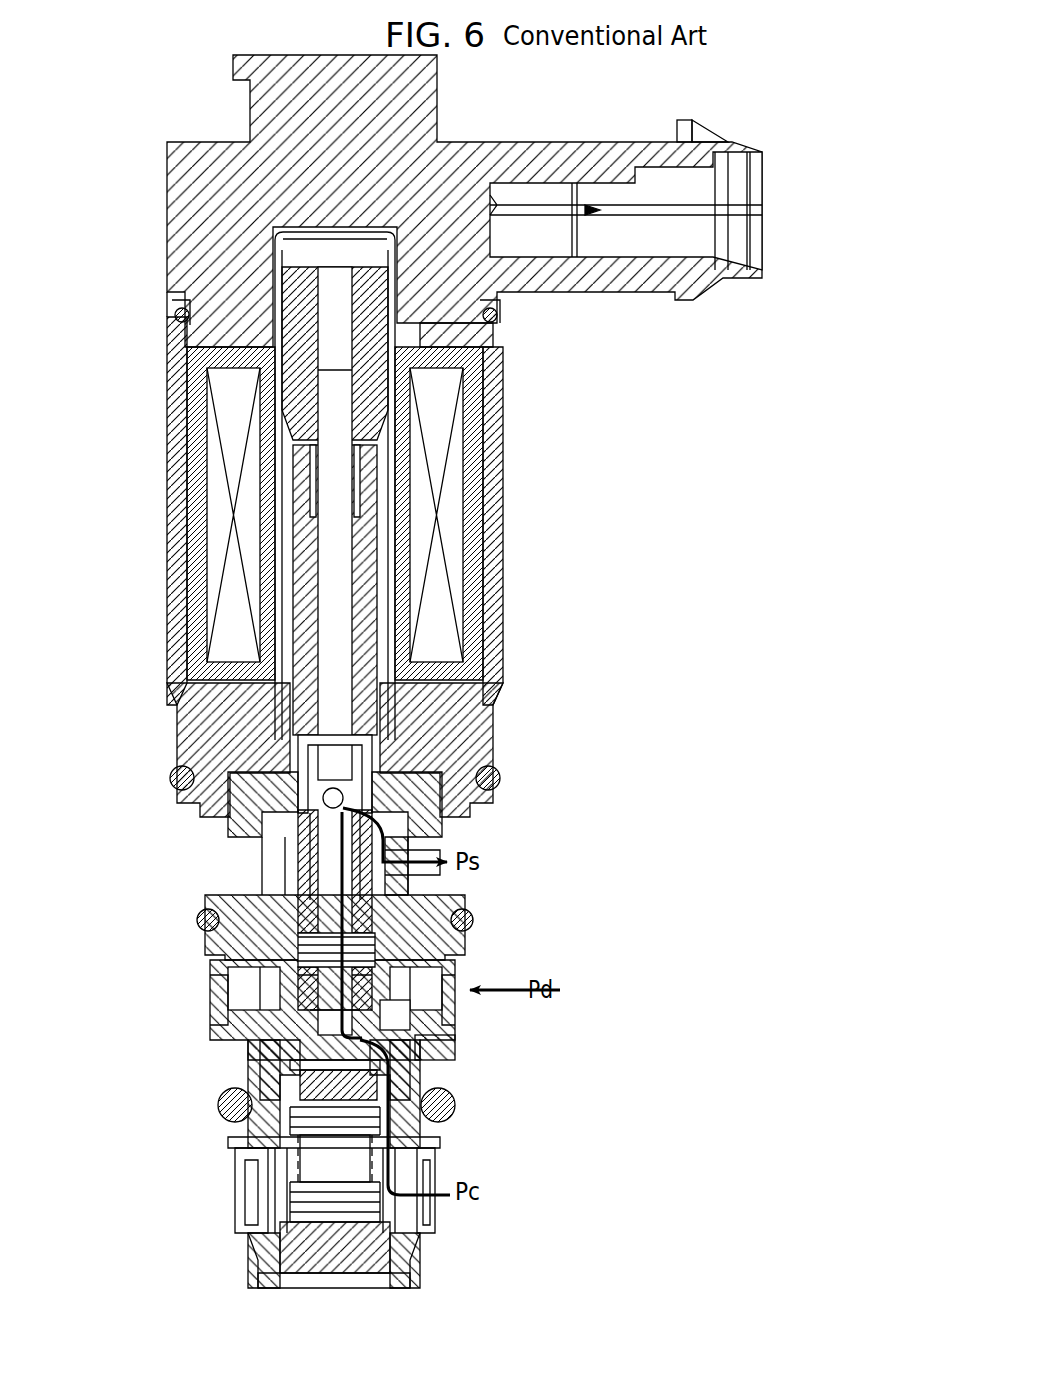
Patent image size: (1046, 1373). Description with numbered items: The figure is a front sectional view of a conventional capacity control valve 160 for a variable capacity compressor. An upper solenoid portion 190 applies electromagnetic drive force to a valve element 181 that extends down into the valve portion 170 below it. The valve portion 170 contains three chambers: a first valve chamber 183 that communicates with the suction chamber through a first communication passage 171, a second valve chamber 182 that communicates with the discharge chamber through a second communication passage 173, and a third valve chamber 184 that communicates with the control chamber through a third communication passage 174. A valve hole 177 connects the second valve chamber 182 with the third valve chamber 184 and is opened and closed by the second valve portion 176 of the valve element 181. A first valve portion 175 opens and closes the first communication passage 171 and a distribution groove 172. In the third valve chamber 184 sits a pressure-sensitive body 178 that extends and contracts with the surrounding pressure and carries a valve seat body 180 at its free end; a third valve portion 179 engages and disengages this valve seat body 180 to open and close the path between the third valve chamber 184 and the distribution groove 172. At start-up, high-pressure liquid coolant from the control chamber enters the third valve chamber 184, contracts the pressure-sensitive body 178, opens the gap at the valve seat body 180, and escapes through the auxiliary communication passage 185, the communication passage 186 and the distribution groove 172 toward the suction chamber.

The capacity control valve 160 is at (620, 422).
The solenoid portion 190 is at (152, 442).
The valve portion 170 is at (505, 928).
The first communication passage 171 is at (405, 848).
The distribution groove 172 is at (327, 862).
The second communication passage 173 is at (430, 1003).
The third communication passage 174 is at (405, 1215).
The first valve portion 175 is at (295, 822).
The second valve portion 176 is at (425, 1015).
The valve hole 177 is at (295, 1038).
The pressure-sensitive body 178 is at (240, 1148).
The third valve portion 179 is at (297, 1070).
The valve seat body 180 is at (223, 1108).
The valve element 181 is at (292, 900).
The second valve chamber 182 is at (405, 980).
The first valve chamber 183 is at (405, 890).
The third valve chamber 184 is at (282, 1208).
The auxiliary communication passage 185 is at (395, 1075).
The communication passage 186 is at (330, 1000).